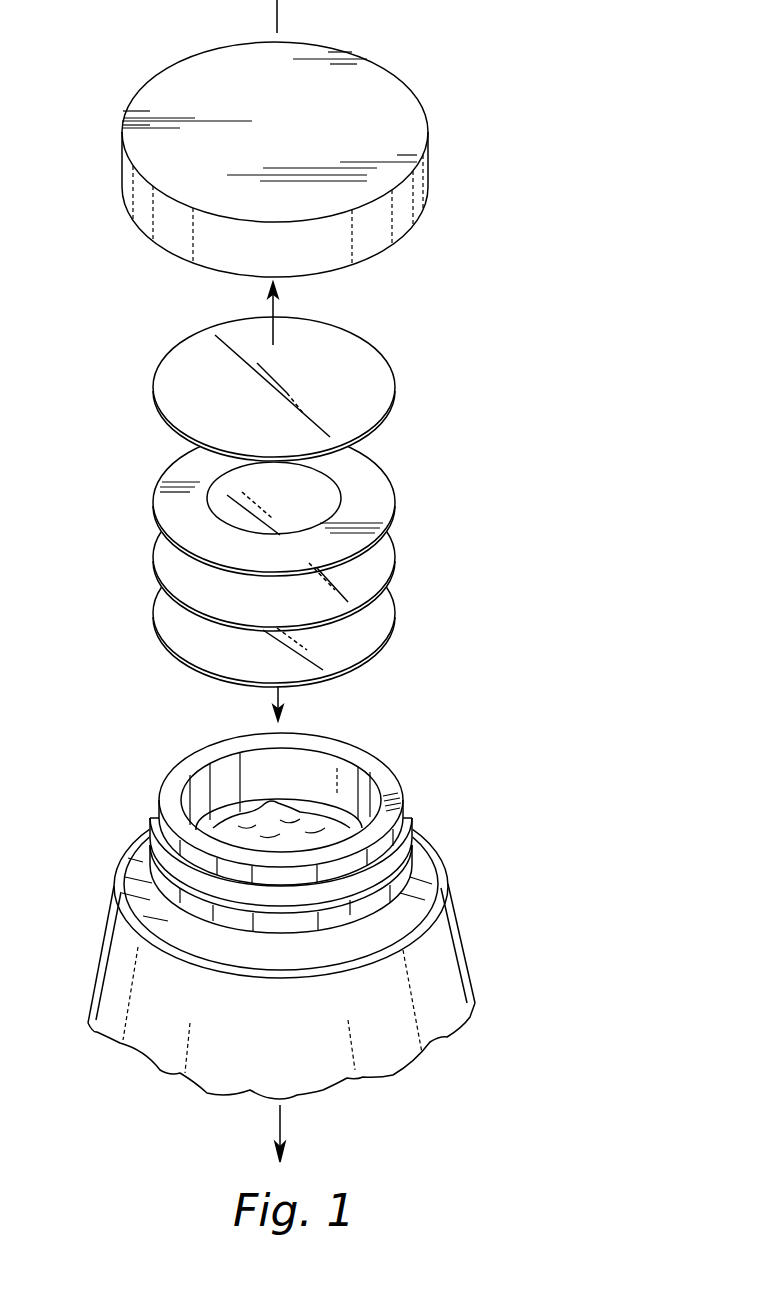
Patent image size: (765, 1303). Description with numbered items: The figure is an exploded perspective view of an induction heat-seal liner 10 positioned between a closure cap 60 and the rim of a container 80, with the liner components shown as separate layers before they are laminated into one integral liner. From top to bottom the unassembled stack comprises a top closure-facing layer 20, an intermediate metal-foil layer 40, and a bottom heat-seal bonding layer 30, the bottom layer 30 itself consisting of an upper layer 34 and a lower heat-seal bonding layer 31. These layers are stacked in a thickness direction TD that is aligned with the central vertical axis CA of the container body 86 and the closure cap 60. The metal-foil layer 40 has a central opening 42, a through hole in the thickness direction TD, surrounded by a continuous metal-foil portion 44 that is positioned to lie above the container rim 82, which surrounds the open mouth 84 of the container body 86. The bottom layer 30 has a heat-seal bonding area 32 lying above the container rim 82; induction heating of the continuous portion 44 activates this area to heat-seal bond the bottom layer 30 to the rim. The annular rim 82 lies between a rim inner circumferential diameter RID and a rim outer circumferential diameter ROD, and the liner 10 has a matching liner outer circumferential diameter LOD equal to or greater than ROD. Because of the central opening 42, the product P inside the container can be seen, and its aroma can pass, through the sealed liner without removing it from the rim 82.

The induction heat-seal liner 10 is at (442, 678).
The top closure-facing layer 20 is at (358, 340).
The bottom heat-seal bonding layer 30 is at (251, 596).
The lower heat-seal bonding layer 31 is at (393, 607).
The heat-seal bonding area 32 is at (190, 665).
The upper layer 34 is at (383, 546).
The intermediate metal-foil layer 40 is at (267, 500).
The central opening 42 is at (240, 473).
The continuous metal-foil portion 44 is at (182, 505).
The closure cap 60 is at (422, 89).
The container 80 is at (323, 905).
The container rim 82 is at (390, 780).
The open mouth 84 is at (313, 763).
The container body 86 is at (460, 857).
The product P is at (252, 830).
The thickness direction TD is at (276, 304).
The central vertical axis CA is at (277, 5).
The liner outer circumferential diameter LOD is at (373, 653).
The rim inner circumferential diameter RID is at (357, 770).
The rim outer circumferential diameter ROD is at (400, 800).